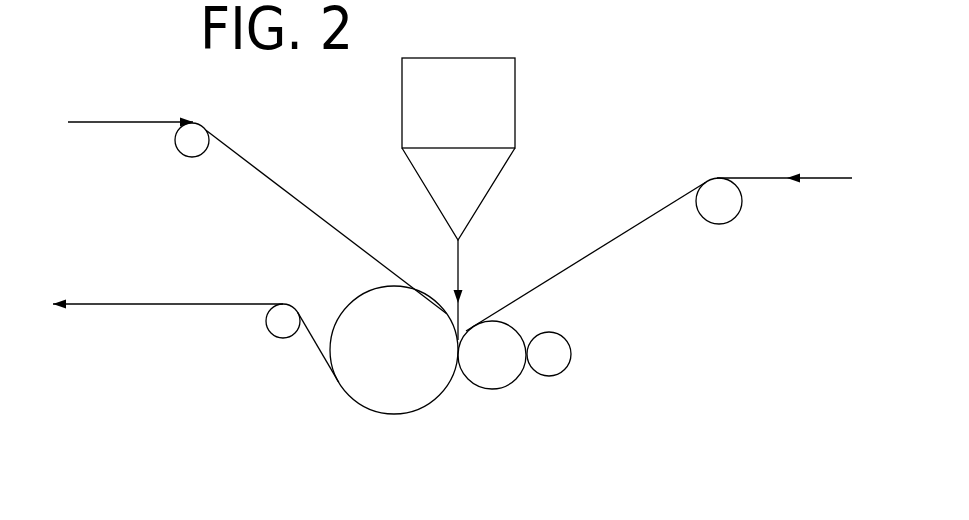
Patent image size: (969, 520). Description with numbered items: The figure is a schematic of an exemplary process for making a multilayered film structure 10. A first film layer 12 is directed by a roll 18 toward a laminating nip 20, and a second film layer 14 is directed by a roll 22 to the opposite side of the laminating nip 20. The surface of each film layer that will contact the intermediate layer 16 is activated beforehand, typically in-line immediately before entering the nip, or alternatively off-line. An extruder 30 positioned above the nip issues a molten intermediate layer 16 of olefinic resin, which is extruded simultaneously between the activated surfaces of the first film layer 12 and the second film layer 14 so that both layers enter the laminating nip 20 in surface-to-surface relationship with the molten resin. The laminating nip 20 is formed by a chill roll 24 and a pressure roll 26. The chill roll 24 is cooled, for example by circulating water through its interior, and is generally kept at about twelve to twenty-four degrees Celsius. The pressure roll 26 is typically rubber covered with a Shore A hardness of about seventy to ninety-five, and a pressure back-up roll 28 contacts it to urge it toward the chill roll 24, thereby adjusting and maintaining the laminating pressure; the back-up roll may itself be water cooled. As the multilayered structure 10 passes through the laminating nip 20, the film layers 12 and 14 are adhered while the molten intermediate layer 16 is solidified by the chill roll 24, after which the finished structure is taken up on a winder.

The multilayered structure 10 is at (159, 315).
The first film layer 12 is at (123, 110).
The second film layer 14 is at (834, 168).
The intermediate layer 16 is at (466, 263).
The roll 18 is at (179, 162).
The laminating nip 20 is at (457, 400).
The roll 22 is at (733, 215).
The chill roll 24 is at (360, 406).
The pressure roll 26 is at (510, 380).
The pressure back-up roll 28 is at (582, 345).
The extruder 30 is at (410, 96).